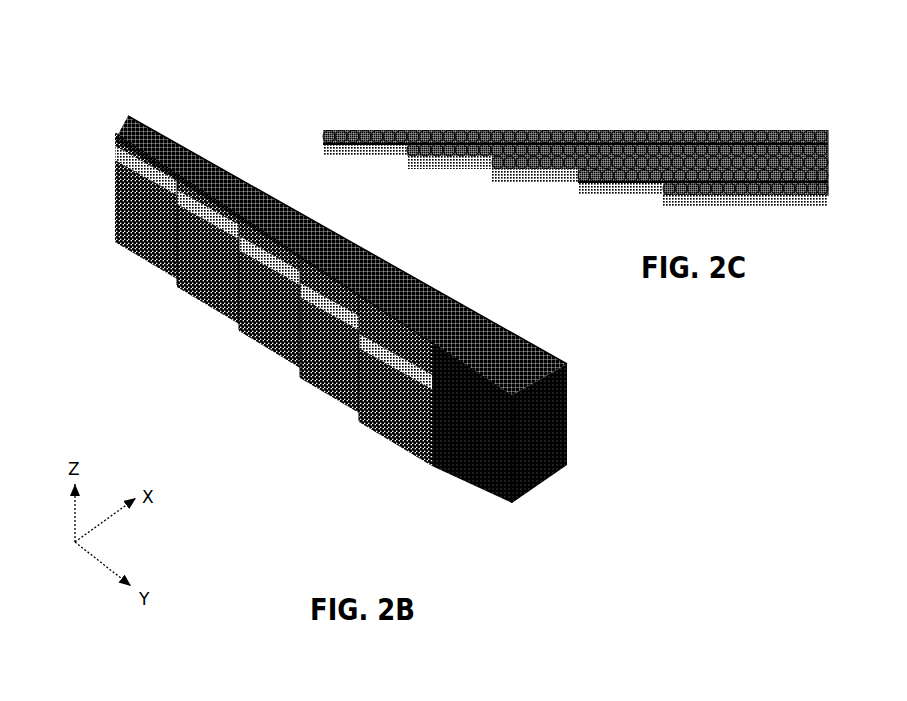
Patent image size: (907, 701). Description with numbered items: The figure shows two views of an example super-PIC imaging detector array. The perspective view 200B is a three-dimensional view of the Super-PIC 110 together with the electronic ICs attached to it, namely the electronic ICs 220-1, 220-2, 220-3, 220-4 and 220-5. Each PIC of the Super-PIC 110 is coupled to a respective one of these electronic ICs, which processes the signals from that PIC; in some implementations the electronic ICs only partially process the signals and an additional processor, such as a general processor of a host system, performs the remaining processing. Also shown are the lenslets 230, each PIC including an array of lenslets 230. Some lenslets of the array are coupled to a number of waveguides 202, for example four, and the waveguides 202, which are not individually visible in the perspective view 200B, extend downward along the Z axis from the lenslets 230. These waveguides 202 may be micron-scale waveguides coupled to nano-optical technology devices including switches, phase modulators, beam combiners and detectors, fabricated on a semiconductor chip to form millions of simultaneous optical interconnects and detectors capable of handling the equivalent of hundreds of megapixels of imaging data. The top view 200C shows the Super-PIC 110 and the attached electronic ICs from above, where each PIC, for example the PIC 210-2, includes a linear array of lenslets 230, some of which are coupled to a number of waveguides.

In FIG. 2B, the perspective view 200B is at (114, 73).
In FIG. 2C, the top view 200C is at (394, 73).
In FIG. 2B, the Super-PIC 110 is at (434, 277).
In FIG. 2C, the Super-PIC 110 is at (779, 105).
In FIG. 2B, the lenslets 230 is at (253, 180).
In FIG. 2C, the lenslets 230 is at (657, 148).
In FIG. 2B, the electronic IC 220-1 is at (397, 438).
In FIG. 2B, the electronic IC 220-2 is at (326, 389).
In FIG. 2C, the electronic IC 220-2 is at (621, 193).
In FIG. 2B, the electronic IC 220-3 is at (263, 343).
In FIG. 2B, the electronic IC 220-4 is at (203, 294).
In FIG. 2B, the electronic IC 220-5 is at (148, 254).
In FIG. 2C, the PIC 210-2 is at (852, 178).
In FIG. 2B, the waveguides 202 is at (569, 413).